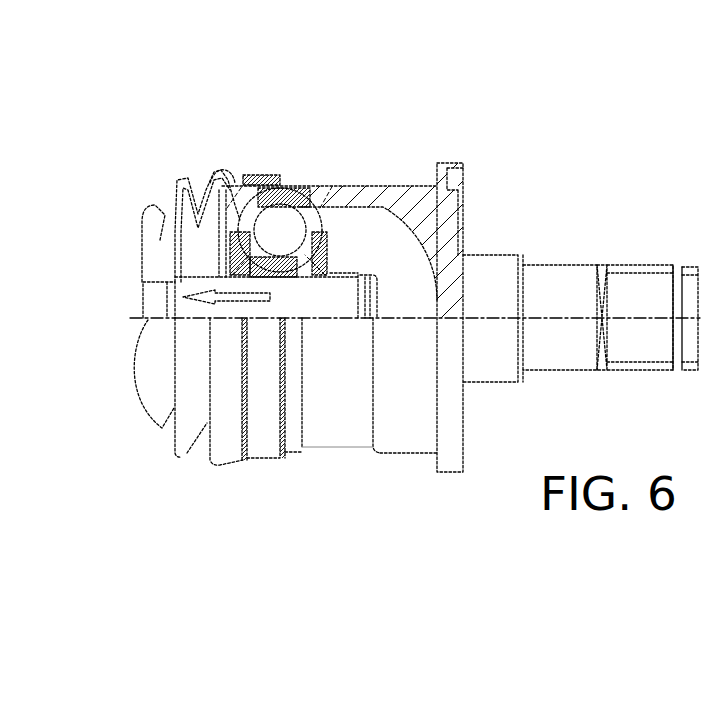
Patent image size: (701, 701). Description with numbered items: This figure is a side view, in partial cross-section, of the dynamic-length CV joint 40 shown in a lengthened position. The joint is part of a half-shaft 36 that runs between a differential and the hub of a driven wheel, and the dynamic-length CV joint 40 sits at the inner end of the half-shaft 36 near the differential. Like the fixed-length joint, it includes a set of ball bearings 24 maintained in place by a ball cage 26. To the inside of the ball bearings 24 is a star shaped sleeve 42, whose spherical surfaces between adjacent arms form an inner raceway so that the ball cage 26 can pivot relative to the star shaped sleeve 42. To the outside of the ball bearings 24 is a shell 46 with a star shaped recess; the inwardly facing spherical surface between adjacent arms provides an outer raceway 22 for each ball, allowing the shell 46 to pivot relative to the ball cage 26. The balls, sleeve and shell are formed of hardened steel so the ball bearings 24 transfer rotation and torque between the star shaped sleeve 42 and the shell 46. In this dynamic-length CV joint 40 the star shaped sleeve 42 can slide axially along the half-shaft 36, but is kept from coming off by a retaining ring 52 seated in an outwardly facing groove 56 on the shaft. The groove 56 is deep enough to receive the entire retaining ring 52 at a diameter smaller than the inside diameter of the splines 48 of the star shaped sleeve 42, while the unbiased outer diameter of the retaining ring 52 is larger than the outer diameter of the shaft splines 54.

The dynamic-length CV joint 40 is at (398, 88).
The shell 46 is at (397, 187).
The star shaped sleeve 42 is at (317, 232).
The ball cage 26 is at (250, 240).
The ball bearings 24 is at (287, 222).
The outer raceway 22 is at (246, 210).
The splines 54 is at (187, 277).
The half-shaft 36 is at (157, 300).
The splines of the star shaped sleeve 48 is at (280, 278).
The retaining ring 52 is at (360, 277).
The groove 56 is at (360, 302).